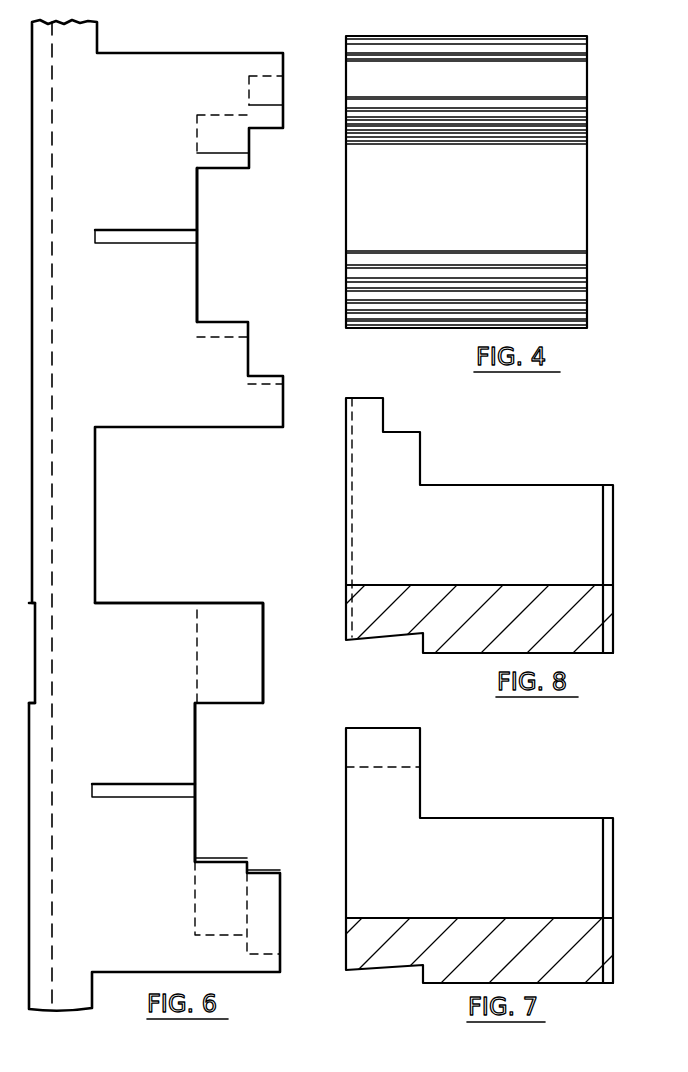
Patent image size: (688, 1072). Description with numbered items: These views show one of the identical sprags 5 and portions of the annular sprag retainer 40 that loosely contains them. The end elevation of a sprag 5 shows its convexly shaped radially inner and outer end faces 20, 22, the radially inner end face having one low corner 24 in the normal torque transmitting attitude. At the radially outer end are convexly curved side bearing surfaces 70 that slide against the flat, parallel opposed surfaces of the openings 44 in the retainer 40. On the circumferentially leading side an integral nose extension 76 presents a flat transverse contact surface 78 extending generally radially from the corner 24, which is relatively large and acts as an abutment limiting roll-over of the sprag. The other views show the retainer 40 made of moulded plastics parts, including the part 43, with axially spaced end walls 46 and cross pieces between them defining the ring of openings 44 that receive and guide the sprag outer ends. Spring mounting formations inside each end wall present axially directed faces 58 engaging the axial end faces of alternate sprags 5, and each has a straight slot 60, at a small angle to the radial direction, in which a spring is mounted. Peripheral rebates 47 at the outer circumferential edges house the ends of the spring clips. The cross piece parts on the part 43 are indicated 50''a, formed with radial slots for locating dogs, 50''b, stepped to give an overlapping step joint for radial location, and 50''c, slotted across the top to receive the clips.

In FIG. 4, the sprag 5 is at (556, 83).
In FIG. 4, the radially inner end face 20 is at (546, 288).
In FIG. 4, the radially outer end face 22 is at (572, 36).
In FIG. 4, the low corner 24 is at (560, 250).
In FIG. 8, the sprag retainer 40 is at (475, 640).
In FIG. 7, the sprag retainer 40 is at (487, 963).
In FIG. 8, the annular injection moulded plastics part 43 is at (343, 612).
In FIG. 7, the annular injection moulded plastics part 43 is at (367, 950).
In FIG. 6, the openings 44 is at (240, 192).
In FIG. 8, the openings 44 is at (398, 482).
In FIG. 7, the openings 44 is at (392, 820).
In FIG. 8, the end walls 46 is at (505, 635).
In FIG. 7, the end walls 46 is at (580, 968).
In FIG. 8, the peripheral rebates 47 is at (410, 640).
In FIG. 7, the peripheral rebates 47 is at (413, 972).
In FIG. 6, the cross piece part with radial slots 50''a is at (241, 200).
In FIG. 7, the cross piece part with radial slots 50''a is at (417, 766).
In FIG. 6, the stepped cross piece part 50''b is at (251, 886).
In FIG. 8, the stepped cross piece part 50''b is at (317, 517).
In FIG. 6, the slotted cross piece part 50''c is at (180, 625).
In FIG. 6, the axially directed face 58 is at (200, 257).
In FIG. 6, the straight slot 60 is at (147, 230).
In FIG. 4, the convexly curved side bearing surfaces 70 is at (466, 108).
In FIG. 4, the nose extension 76 is at (548, 172).
In FIG. 4, the flat transverse contact surface 78 is at (444, 211).